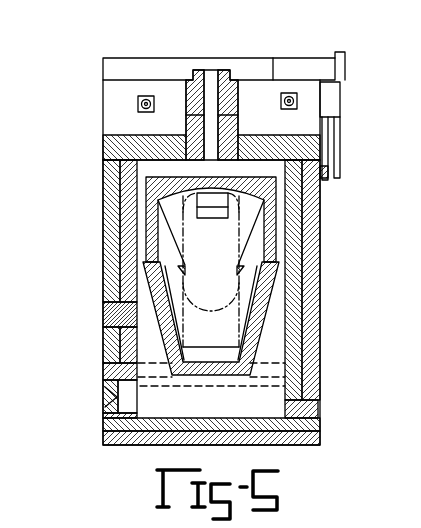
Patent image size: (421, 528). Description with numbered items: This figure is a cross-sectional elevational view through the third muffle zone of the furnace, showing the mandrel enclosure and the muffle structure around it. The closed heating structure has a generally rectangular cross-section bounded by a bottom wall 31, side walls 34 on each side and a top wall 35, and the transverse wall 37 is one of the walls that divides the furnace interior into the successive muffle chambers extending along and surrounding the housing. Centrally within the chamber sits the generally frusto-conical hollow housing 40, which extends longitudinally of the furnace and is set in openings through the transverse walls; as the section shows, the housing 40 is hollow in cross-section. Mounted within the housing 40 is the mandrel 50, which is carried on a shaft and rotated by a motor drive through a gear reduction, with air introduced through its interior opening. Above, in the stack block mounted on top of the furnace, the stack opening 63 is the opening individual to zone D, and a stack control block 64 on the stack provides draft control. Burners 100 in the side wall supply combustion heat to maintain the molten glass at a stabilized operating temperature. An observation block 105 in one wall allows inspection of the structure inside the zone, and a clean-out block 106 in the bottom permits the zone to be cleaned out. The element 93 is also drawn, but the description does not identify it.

The bottom wall 31 is at (138, 447).
The side walls 34 is at (103, 269).
The top wall 35 is at (210, 70).
The transverse wall 37 is at (260, 398).
The frusto-conical hollow housing 40 is at (268, 260).
The mandrel 50 is at (240, 228).
The stack opening 63 is at (232, 79).
The stack control block 64 is at (196, 73).
The port element 93 is at (112, 396).
The burners 100 is at (138, 104).
The observation block 105 is at (103, 317).
The clean-out block 106 is at (320, 410).